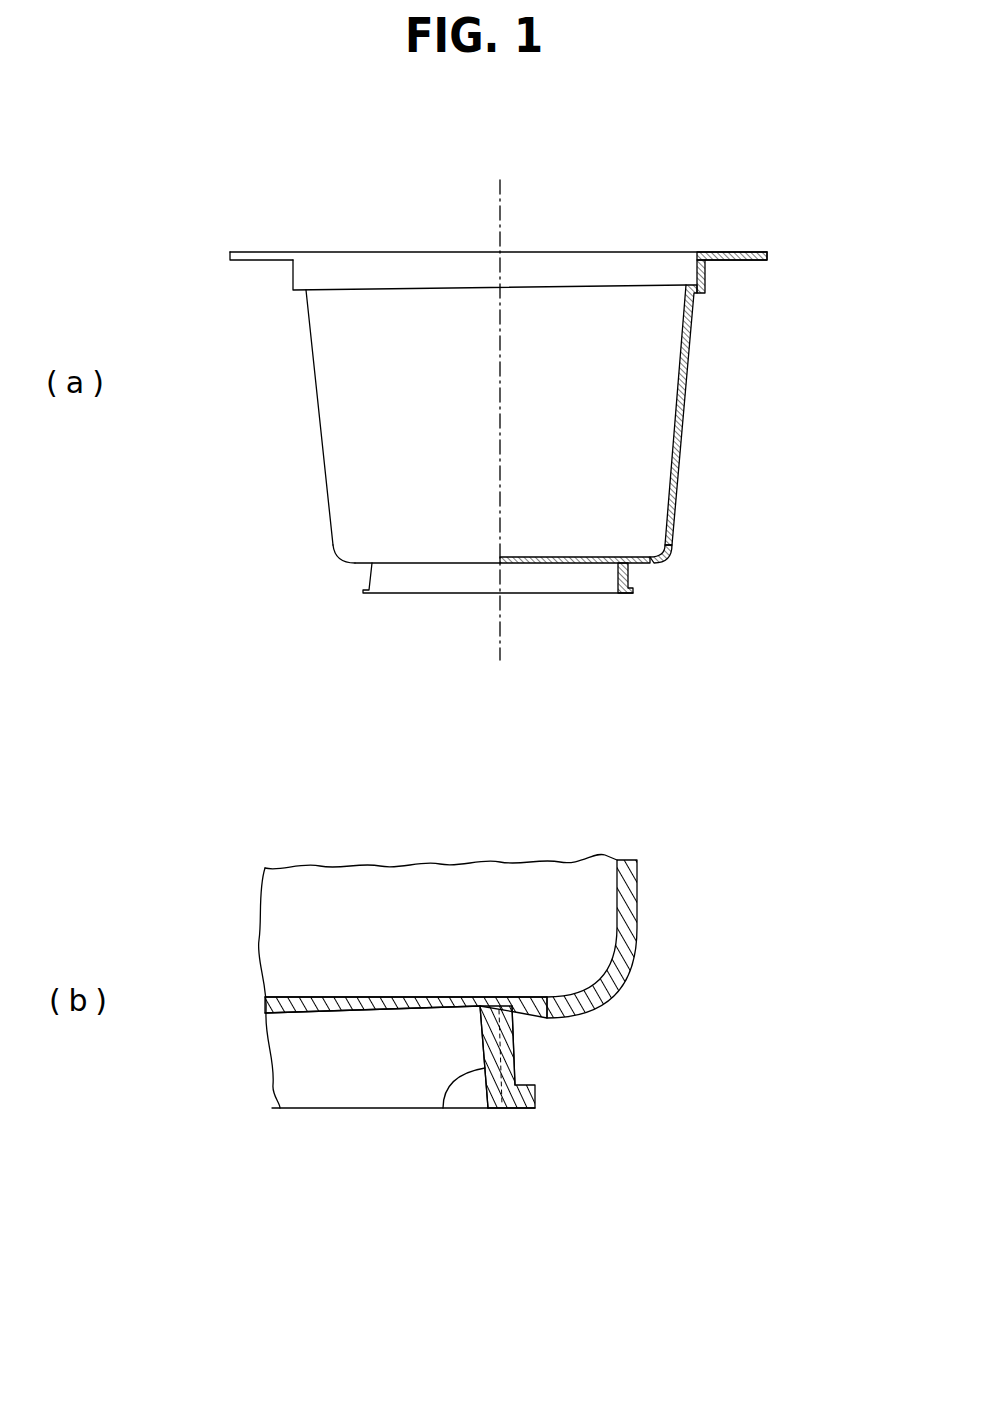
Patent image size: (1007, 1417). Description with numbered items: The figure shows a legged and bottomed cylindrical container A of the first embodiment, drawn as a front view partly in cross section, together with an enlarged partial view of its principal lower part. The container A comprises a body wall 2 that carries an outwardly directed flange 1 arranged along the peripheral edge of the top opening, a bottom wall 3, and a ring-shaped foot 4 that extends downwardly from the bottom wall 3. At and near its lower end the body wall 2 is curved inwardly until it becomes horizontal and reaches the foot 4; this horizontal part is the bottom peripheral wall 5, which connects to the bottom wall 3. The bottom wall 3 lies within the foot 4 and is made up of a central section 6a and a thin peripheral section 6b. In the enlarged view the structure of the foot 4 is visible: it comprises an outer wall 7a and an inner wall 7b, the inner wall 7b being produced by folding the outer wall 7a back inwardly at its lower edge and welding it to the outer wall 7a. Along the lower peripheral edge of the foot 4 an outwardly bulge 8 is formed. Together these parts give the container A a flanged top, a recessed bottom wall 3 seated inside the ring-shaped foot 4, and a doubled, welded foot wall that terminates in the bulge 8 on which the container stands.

The footed and bottomed cylindrical container A is at (305, 477).
The outwardly directed flange 1 is at (737, 250).
The body wall 2 is at (686, 366).
The bottom wall 3 is at (530, 563).
The ring-shaped foot 4 is at (632, 576).
The bottom peripheral wall 5 is at (642, 563).
The central section 6a is at (325, 1015).
The thin peripheral section 6b is at (430, 1010).
The outer wall 7a is at (518, 1055).
The inner wall 7b is at (443, 1108).
The outwardly bulge 8 is at (538, 1100).